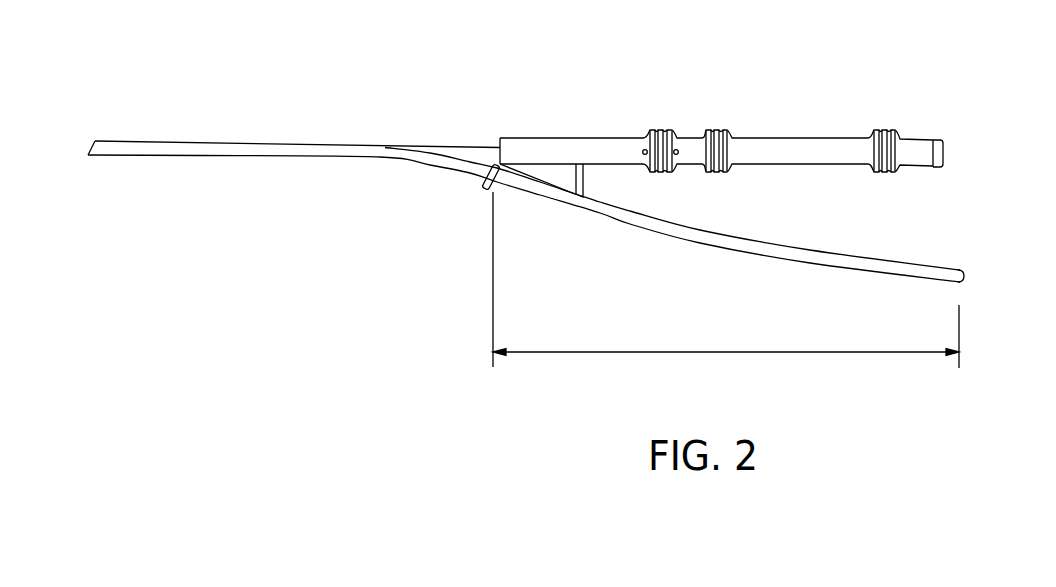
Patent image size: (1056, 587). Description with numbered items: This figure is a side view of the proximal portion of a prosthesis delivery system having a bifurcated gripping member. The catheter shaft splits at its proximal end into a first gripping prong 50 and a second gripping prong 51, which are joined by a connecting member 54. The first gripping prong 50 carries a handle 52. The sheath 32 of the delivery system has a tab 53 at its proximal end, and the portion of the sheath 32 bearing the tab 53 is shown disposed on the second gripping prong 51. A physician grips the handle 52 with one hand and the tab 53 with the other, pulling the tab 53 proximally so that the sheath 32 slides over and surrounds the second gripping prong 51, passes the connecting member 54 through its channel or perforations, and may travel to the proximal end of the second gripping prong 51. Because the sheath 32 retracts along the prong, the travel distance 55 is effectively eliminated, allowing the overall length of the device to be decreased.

The sheath 32 is at (300, 141).
The first gripping prong 50 is at (482, 146).
The second gripping prong 51 is at (631, 225).
The handle 52 is at (634, 112).
The tab 53 is at (485, 187).
The connecting member 54 is at (583, 183).
The travel distance 55 is at (687, 353).